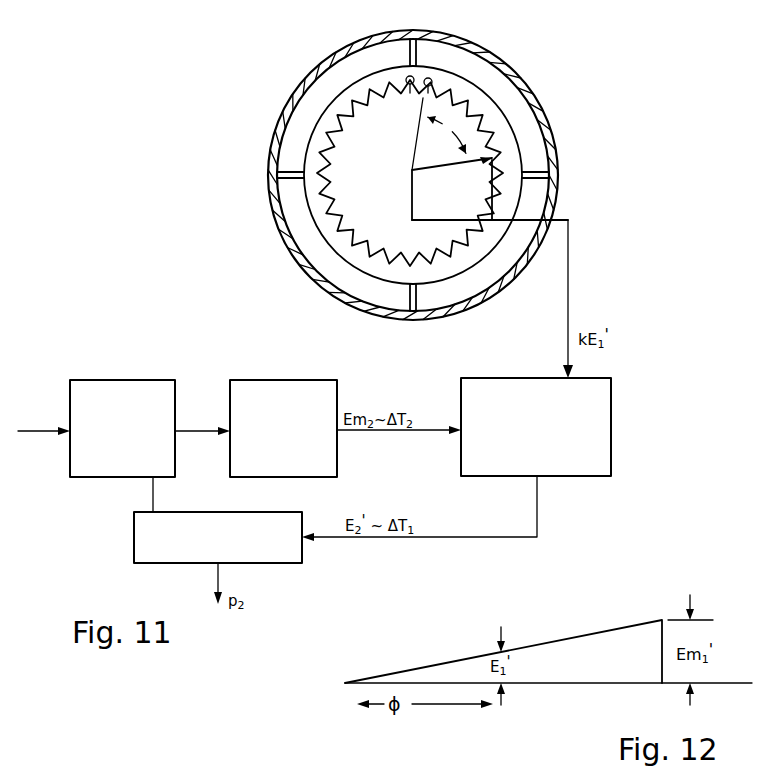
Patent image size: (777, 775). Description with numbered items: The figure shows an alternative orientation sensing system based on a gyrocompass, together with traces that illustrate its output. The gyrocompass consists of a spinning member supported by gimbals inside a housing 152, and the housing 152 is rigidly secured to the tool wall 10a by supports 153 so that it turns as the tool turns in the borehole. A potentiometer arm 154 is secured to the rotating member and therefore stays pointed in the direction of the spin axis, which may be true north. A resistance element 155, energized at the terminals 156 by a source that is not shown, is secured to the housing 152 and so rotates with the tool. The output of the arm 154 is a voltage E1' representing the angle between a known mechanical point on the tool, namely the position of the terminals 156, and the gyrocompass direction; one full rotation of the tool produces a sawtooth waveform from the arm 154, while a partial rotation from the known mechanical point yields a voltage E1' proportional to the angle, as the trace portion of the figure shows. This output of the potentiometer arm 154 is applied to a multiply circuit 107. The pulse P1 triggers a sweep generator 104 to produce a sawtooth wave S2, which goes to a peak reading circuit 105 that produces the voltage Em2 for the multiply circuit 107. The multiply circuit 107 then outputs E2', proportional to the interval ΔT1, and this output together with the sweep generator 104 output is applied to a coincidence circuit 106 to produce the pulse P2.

The tool wall 10a is at (536, 96).
The housing 152 is at (518, 148).
The supports 153 is at (408, 50).
The potentiometer arm 154 is at (442, 167).
The resistance element 155 is at (337, 227).
The terminals 156 is at (417, 75).
The sweep generator 104 is at (107, 380).
The peak reading circuit 105 is at (268, 380).
The coincidence circuit 106 is at (134, 543).
The multiply circuit 107 is at (495, 378).